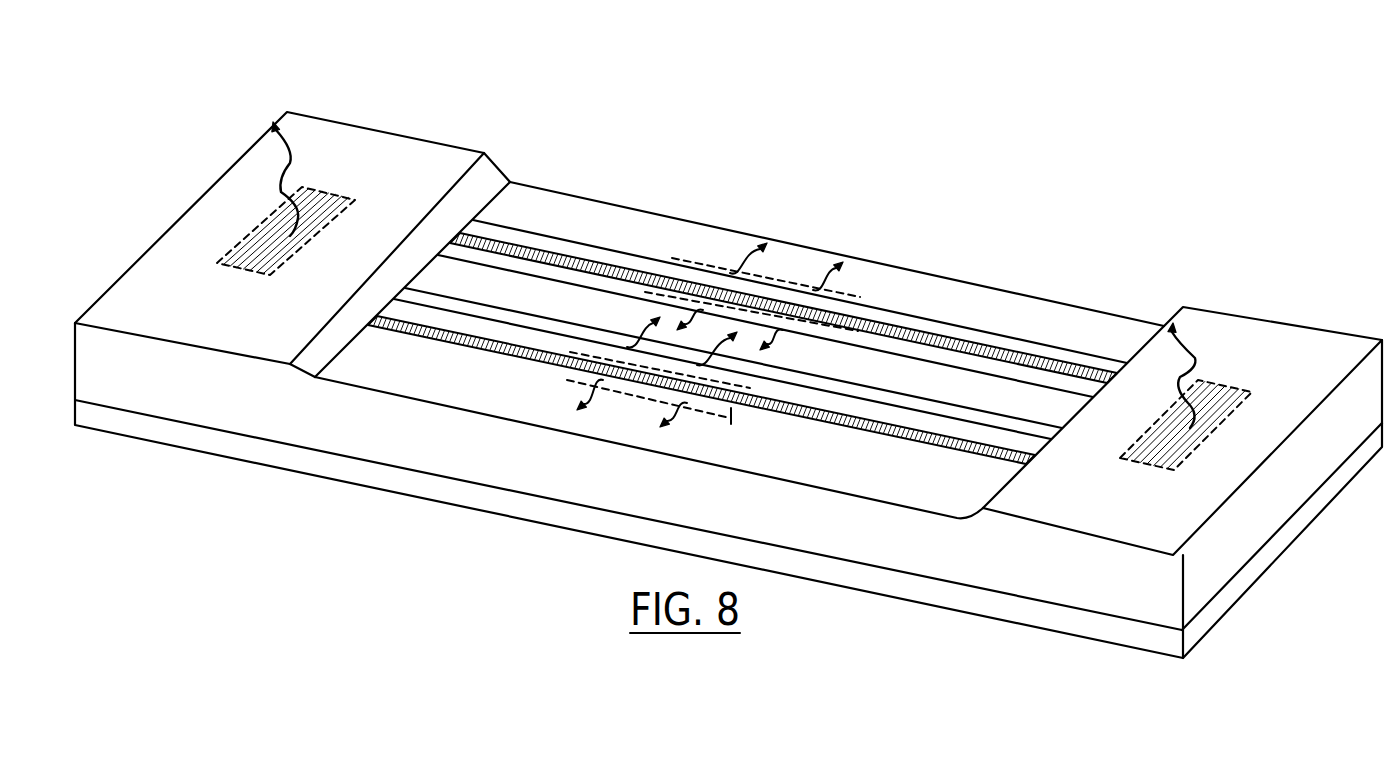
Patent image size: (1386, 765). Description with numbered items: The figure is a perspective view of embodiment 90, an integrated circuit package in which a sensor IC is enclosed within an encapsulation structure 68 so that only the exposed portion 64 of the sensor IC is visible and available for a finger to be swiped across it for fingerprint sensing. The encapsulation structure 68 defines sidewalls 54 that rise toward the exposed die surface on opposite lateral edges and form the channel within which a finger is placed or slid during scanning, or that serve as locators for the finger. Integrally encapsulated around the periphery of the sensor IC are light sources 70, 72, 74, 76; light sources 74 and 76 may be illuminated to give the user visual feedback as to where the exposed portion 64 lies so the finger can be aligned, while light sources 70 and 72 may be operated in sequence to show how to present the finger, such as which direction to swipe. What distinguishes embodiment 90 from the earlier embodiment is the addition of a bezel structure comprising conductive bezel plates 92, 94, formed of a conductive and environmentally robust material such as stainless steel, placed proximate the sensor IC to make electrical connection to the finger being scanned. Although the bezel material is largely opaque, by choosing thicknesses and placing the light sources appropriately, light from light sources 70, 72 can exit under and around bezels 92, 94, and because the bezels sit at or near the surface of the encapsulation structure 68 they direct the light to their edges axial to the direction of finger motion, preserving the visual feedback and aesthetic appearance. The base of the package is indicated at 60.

The sidewalls 54 is at (310, 358).
The substrate 60 is at (1010, 605).
The exposed portion of sensor IC 64 is at (930, 372).
The encapsulation structure 68 is at (455, 392).
The light source 70 is at (732, 418).
The light source 72 is at (785, 275).
The light source 74 is at (270, 222).
The light source 76 is at (1217, 430).
The embodiment 90 is at (722, 136).
The conductive bezel plate 92 is at (508, 228).
The conductive bezel plate 94 is at (553, 368).